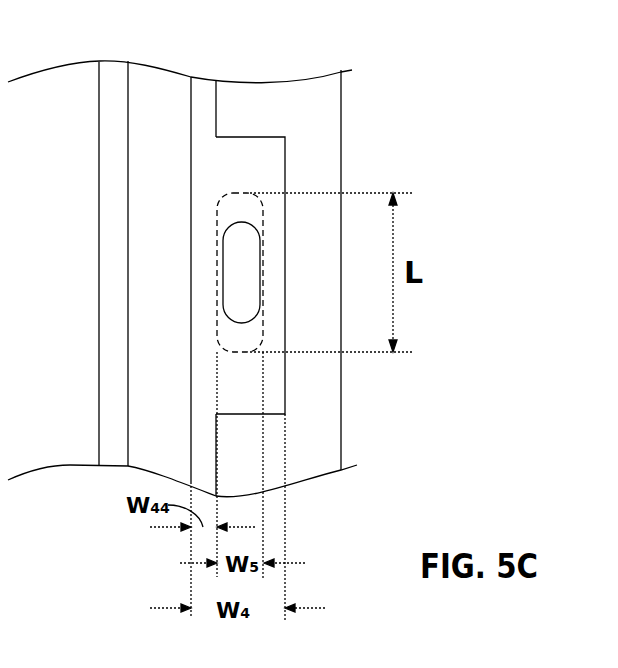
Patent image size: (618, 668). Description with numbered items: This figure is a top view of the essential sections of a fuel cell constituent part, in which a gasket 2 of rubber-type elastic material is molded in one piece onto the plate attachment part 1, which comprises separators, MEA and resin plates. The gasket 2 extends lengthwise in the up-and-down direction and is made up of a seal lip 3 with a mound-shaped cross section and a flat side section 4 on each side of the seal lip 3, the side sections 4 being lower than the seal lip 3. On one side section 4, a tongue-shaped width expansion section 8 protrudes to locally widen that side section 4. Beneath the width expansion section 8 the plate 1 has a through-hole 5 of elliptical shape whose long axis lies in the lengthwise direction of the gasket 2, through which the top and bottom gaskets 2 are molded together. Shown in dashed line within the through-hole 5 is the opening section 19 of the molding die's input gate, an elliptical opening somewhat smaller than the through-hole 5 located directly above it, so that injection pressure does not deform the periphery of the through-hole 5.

The plate attachment part 1 is at (325, 439).
The gasket 2 is at (146, 73).
The seal lip 3 is at (160, 95).
The side section 4 is at (109, 92).
The through-hole 5 is at (255, 210).
The width expansion section 8 is at (270, 152).
The opening section 19 is at (245, 302).